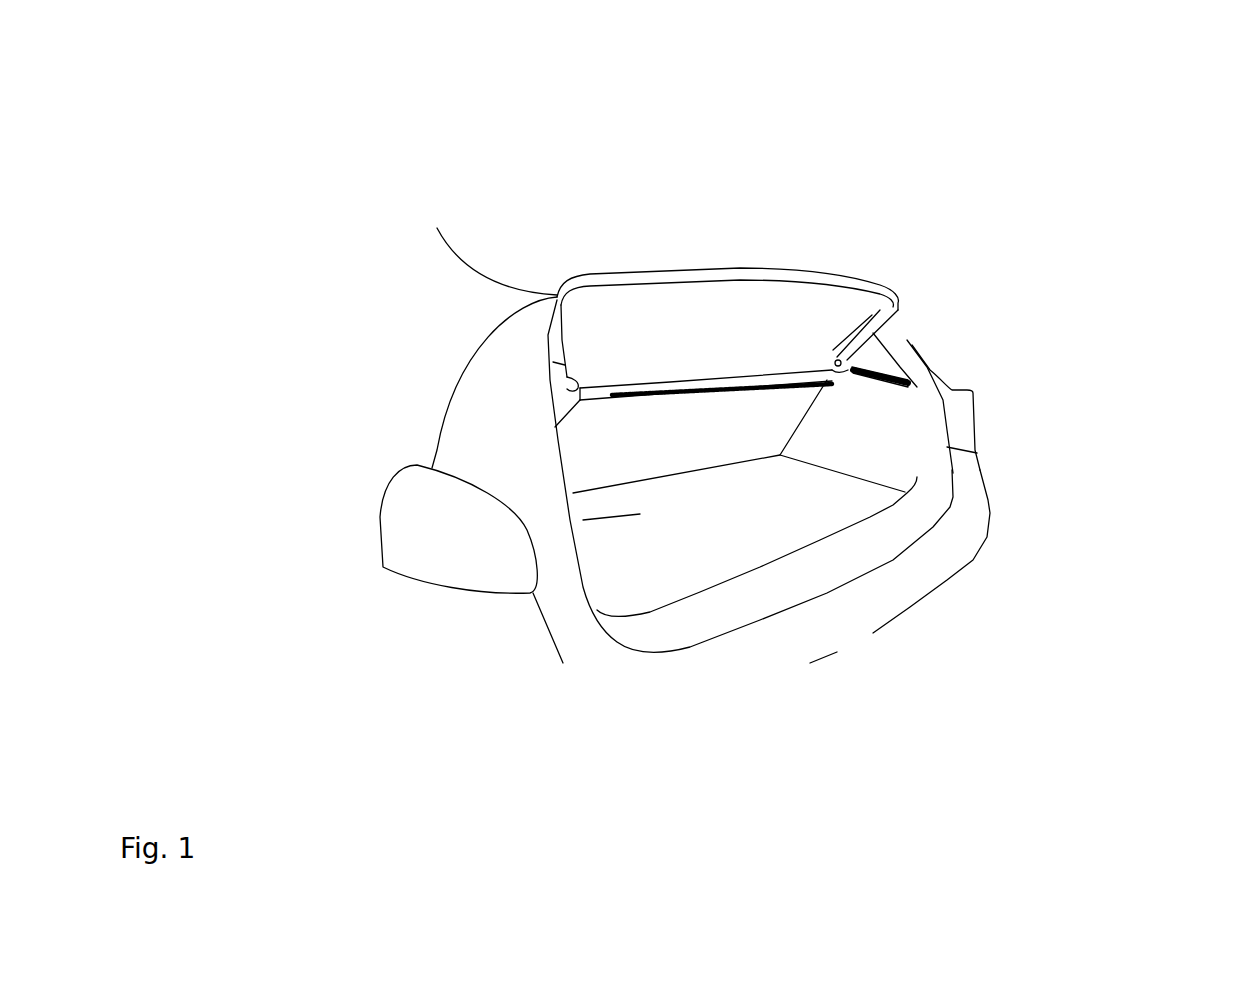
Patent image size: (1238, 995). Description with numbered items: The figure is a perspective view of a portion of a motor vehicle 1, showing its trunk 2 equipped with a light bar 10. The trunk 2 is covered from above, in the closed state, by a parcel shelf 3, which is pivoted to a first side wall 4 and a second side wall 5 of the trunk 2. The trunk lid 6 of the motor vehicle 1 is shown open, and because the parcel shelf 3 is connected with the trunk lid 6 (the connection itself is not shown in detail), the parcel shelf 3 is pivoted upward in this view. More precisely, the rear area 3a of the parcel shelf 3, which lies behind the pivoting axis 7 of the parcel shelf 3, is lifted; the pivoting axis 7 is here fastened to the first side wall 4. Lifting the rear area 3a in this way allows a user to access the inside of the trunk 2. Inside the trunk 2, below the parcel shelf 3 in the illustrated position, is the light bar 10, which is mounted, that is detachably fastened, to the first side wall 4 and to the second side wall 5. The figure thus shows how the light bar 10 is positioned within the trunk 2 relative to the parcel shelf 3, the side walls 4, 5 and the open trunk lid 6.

The motor vehicle 1 is at (370, 388).
The trunk lid 6 is at (537, 212).
The parcel shelf 3 is at (780, 262).
The rear area of the parcel shelf 3a is at (795, 310).
The light bar 10 is at (595, 392).
The pivoting axis 7 is at (855, 357).
The trunk 2 is at (763, 467).
The first side wall 4 is at (878, 445).
The second side wall 5 is at (582, 520).